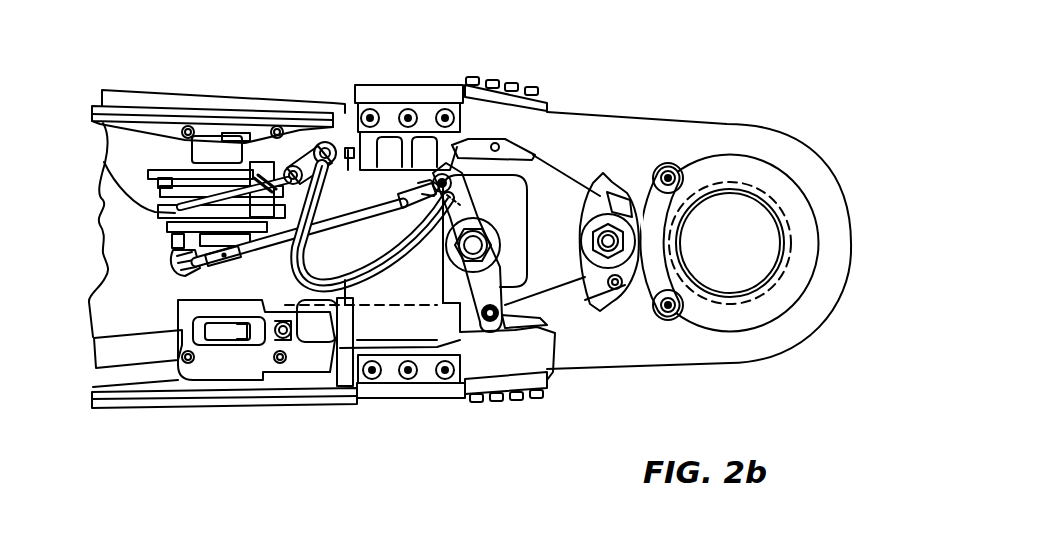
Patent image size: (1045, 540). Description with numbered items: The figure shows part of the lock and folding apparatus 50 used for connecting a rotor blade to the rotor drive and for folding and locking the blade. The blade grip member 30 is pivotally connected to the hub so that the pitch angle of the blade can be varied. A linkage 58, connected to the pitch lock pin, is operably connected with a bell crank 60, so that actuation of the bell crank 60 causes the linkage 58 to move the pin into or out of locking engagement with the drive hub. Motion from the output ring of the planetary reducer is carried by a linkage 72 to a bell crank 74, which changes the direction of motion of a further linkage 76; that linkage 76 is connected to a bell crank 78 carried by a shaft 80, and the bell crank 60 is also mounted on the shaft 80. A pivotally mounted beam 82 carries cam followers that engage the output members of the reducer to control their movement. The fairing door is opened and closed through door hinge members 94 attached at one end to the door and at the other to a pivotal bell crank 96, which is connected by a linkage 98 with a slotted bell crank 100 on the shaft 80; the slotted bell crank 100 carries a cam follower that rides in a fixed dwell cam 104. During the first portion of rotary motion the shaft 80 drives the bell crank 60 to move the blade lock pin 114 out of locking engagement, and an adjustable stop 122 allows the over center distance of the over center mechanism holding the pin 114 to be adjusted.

The blade grip member 30 is at (605, 116).
The lock and folding apparatus 50 is at (298, 94).
The linkage 58 is at (122, 358).
The bell crank 60 is at (222, 312).
The linkage 72 is at (540, 325).
The bell crank 74 is at (491, 192).
The linkage 76 is at (353, 216).
The bell crank 78 is at (178, 263).
The shaft 80 is at (205, 312).
The pivotally mounted beam 82 is at (663, 165).
The door hinge members 94 is at (316, 278).
The bell crank 96 is at (340, 110).
The linkage 98 is at (252, 180).
The slotted bell crank 100 is at (104, 162).
The fixed dwell cam 104 is at (213, 178).
The blade lock pin 114 is at (362, 340).
The adjustable stop 122 is at (288, 345).